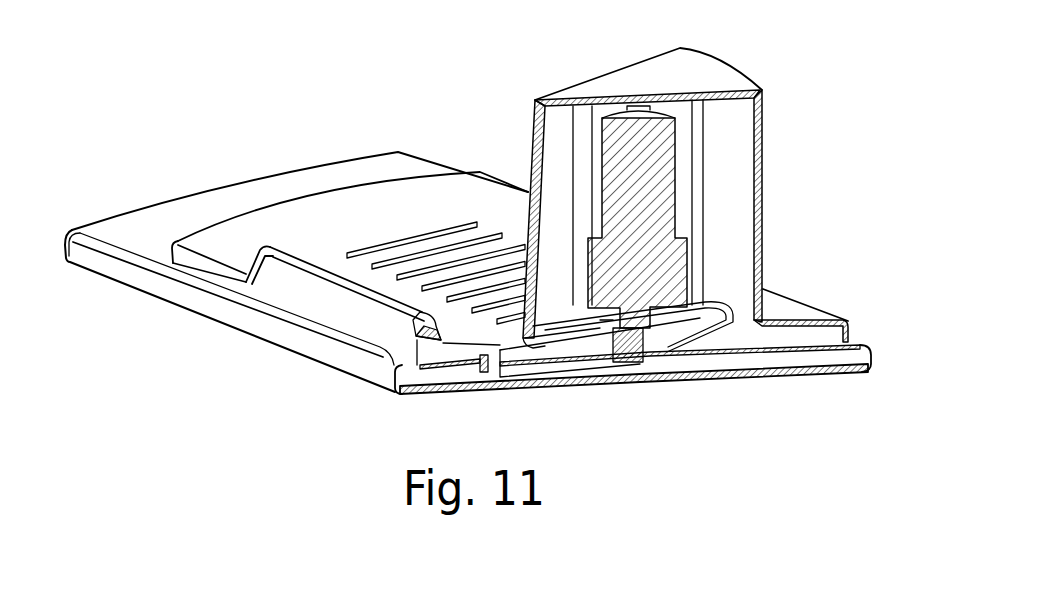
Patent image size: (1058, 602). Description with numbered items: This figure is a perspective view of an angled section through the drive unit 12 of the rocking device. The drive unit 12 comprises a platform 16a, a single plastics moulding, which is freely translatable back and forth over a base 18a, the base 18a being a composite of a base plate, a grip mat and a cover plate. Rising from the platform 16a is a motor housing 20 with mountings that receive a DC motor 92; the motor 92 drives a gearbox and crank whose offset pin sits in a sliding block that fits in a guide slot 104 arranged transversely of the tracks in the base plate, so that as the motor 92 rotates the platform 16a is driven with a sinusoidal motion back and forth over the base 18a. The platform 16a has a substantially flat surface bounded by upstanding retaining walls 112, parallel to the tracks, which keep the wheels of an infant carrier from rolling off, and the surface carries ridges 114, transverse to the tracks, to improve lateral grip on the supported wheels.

The base 18a is at (131, 200).
The platform 16a is at (490, 190).
The upstanding retaining walls 112 is at (295, 257).
The ridges 114 is at (432, 243).
The drive unit 12 is at (453, 200).
The motor housing 20 is at (750, 78).
The DC motor 92 is at (648, 177).
The guide slot 104 is at (487, 372).